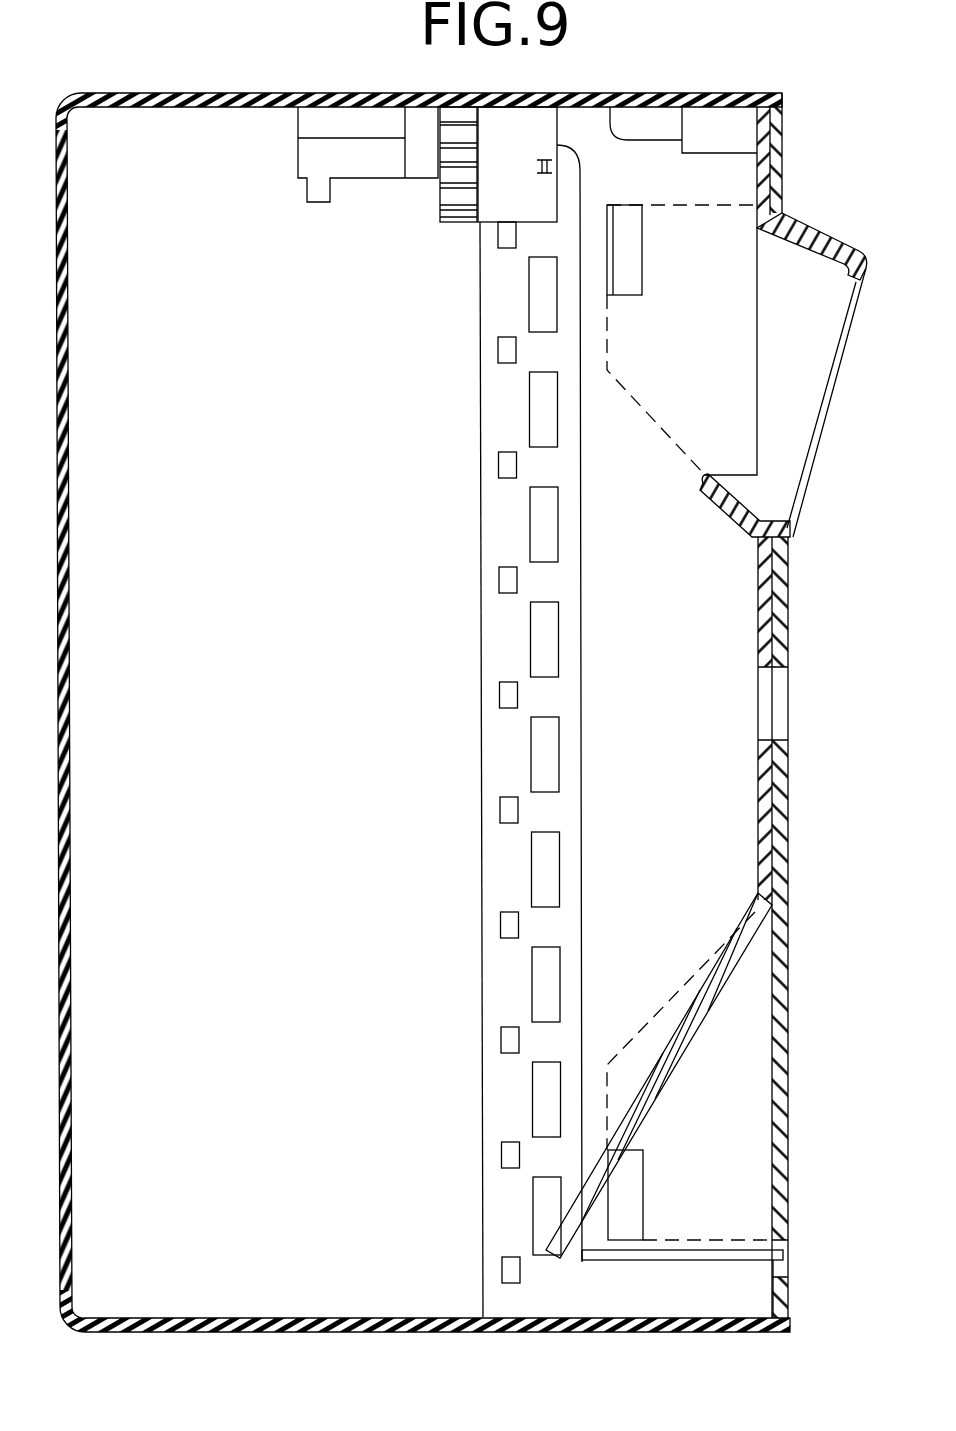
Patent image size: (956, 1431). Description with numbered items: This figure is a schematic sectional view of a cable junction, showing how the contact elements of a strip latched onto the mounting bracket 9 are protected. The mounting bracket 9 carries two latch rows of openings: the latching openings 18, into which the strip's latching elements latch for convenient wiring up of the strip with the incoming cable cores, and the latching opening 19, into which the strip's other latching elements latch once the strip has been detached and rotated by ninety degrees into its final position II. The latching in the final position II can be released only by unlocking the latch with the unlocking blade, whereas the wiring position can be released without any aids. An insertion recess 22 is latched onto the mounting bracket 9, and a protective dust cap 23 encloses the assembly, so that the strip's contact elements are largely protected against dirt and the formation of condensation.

The protective dust cap 23 is at (197, 100).
The mounting bracket 9 is at (593, 712).
The latching opening 19 is at (538, 755).
The latching openings 18 is at (502, 918).
The final position II is at (366, 196).
The insertion recess 22 is at (703, 1017).